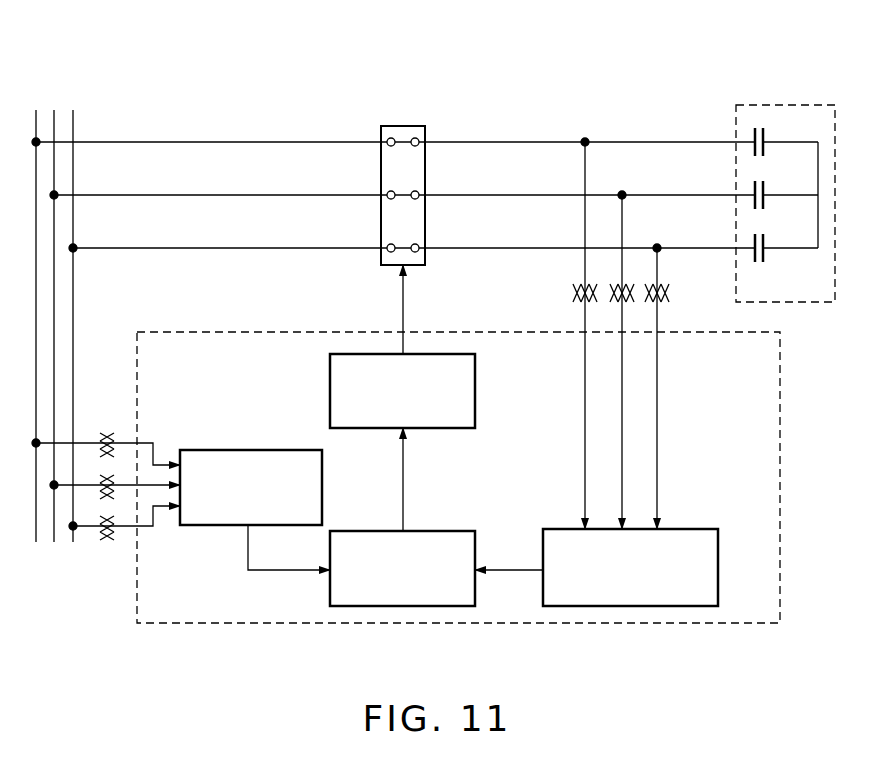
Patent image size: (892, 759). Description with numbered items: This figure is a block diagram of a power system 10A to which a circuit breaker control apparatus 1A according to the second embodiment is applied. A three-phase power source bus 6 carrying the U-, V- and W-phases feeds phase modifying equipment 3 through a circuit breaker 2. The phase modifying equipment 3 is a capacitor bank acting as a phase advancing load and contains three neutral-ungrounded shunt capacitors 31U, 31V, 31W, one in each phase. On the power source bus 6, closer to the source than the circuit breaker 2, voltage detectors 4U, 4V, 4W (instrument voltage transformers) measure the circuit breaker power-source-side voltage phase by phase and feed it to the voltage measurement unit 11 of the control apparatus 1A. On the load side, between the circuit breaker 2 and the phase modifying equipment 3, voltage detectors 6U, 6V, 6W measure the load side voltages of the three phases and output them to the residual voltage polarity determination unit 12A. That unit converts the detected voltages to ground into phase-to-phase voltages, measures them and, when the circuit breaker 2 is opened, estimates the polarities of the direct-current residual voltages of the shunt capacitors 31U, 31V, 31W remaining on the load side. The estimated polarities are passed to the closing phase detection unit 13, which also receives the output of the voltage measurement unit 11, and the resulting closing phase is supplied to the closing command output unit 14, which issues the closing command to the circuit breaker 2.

The power source bus 6 is at (82, 79).
The circuit breaker 2 is at (403, 126).
The phase modifying equipment 3 is at (768, 105).
The power system 10A is at (806, 70).
The shunt capacitor 31U is at (764, 152).
The shunt capacitor 31V is at (764, 205).
The shunt capacitor 31W is at (764, 258).
The voltage detector 6U is at (573, 293).
The voltage detector 6V is at (610, 292).
The voltage detector 6W is at (669, 293).
The voltage detector 4U is at (115, 432).
The voltage detector 4V is at (100, 475).
The voltage detector 4W is at (107, 540).
The circuit breaker control apparatus 1A is at (780, 495).
The voltage measurement unit 11 is at (248, 450).
The closing phase detection unit 13 is at (430, 531).
The closing command output unit 14 is at (475, 393).
The residual voltage polarity determination unit 12A is at (718, 568).